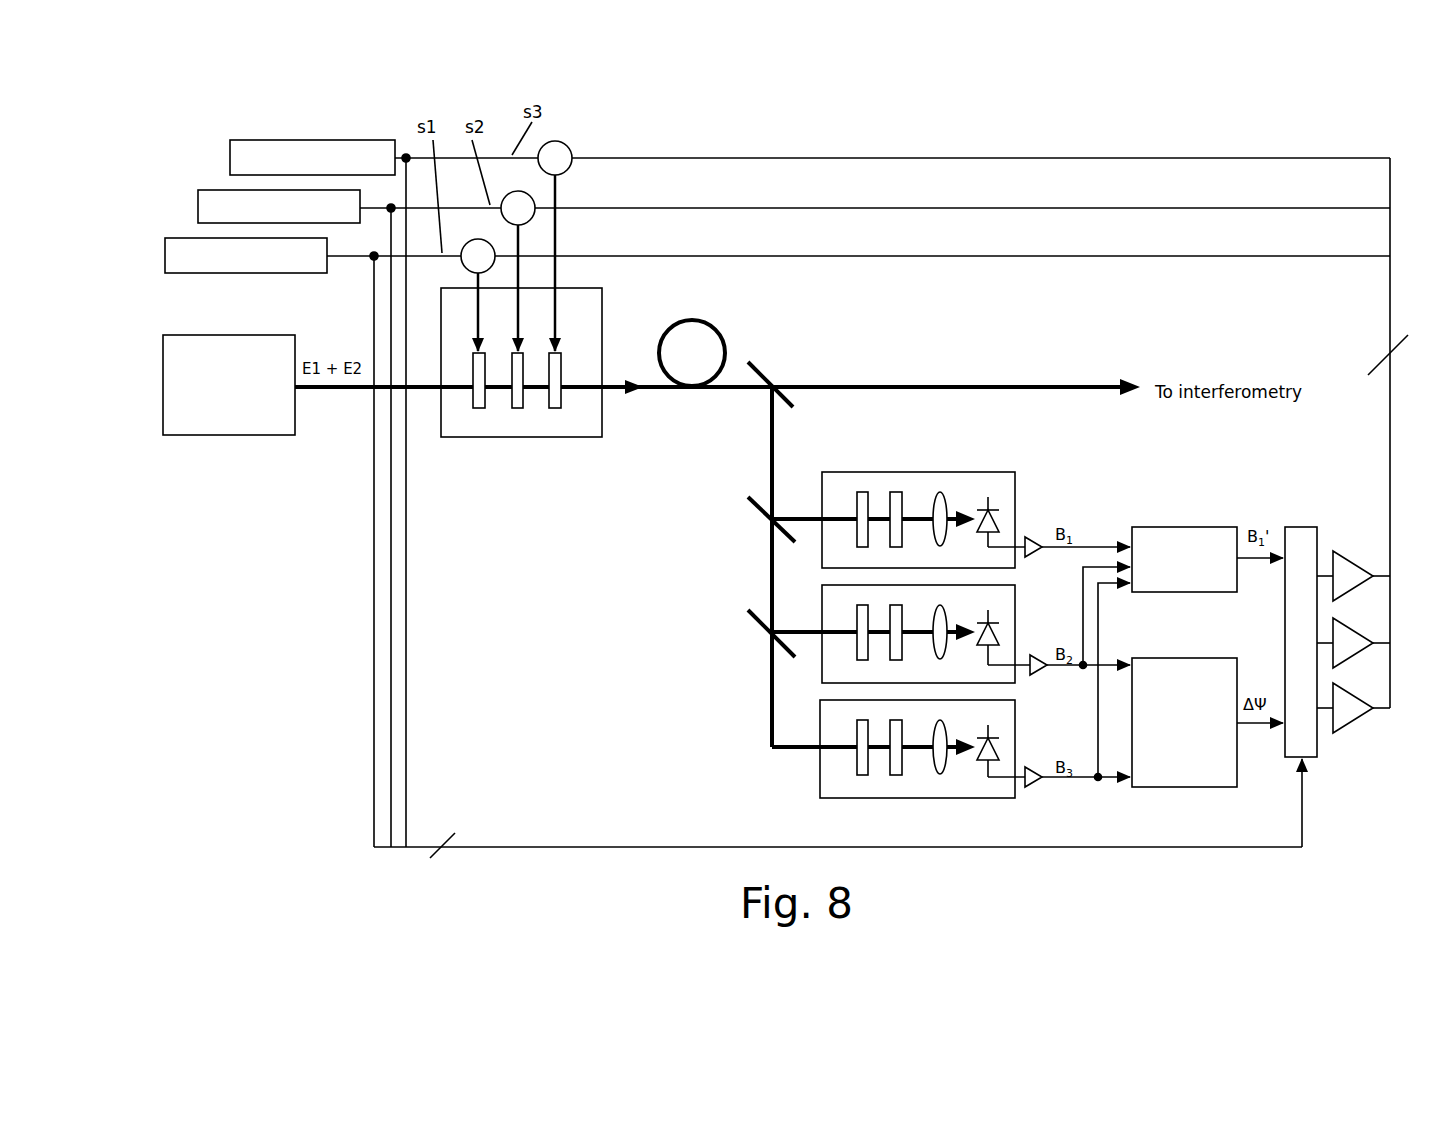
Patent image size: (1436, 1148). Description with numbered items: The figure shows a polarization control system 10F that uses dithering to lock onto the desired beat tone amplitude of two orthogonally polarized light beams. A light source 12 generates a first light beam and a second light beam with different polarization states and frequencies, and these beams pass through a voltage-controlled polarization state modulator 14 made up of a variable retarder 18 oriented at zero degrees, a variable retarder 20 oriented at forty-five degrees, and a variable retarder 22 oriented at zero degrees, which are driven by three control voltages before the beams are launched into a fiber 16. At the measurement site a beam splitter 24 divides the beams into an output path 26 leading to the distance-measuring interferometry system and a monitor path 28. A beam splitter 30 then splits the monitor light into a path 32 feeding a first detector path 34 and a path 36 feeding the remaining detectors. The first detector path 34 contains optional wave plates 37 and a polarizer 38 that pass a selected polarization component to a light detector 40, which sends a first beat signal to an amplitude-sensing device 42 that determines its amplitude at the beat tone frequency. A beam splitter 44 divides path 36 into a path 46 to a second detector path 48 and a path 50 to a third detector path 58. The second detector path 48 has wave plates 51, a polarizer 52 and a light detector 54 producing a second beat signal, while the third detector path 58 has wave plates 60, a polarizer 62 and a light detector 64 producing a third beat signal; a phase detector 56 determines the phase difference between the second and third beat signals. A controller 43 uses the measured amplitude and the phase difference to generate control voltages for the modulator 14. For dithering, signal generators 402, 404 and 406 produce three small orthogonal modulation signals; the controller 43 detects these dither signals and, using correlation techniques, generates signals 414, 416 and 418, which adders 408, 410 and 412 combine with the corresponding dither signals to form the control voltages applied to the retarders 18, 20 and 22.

The polarization control system 10F is at (238, 105).
The light source 12 is at (260, 335).
The voltage-controlled polarization state modulator 14 is at (547, 376).
The fiber 16 is at (700, 320).
The voltage-controlled variable retarder 18 is at (478, 410).
The voltage-controlled variable retarder 20 is at (517, 410).
The voltage-controlled variable retarder 22 is at (556, 410).
The beam splitter 24 is at (784, 369).
The output path 26 is at (978, 387).
The monitor path 28 is at (768, 442).
The beam splitter 30 is at (746, 527).
The path 32 is at (798, 514).
The first detector path 34 is at (942, 493).
The path 36 is at (768, 567).
The wave plates 37 is at (870, 503).
The polarizer 38 is at (903, 503).
The light detector 40 is at (1003, 494).
The amplitude-sensing device 42 is at (1187, 525).
The controller 43 is at (1293, 525).
The beam splitter 44 is at (752, 641).
The path 46 is at (796, 627).
The second detector path 48 is at (930, 626).
The path 50 is at (767, 690).
The wave plates 51 is at (858, 642).
The polarizer 52 is at (902, 647).
The light detector 54 is at (999, 613).
The phase detector 56 is at (1177, 657).
The third detector path 58 is at (888, 770).
The wave plates 60 is at (866, 770).
The polarizer 62 is at (898, 770).
The light detector 64 is at (998, 785).
The signal generator 402 is at (188, 237).
The signal generator 404 is at (220, 188).
The signal generator 406 is at (372, 140).
The adder 408 is at (473, 241).
The adder 410 is at (512, 192).
The adder 412 is at (565, 146).
The signal 414 is at (647, 256).
The signal 416 is at (722, 208).
The signal 418 is at (788, 158).